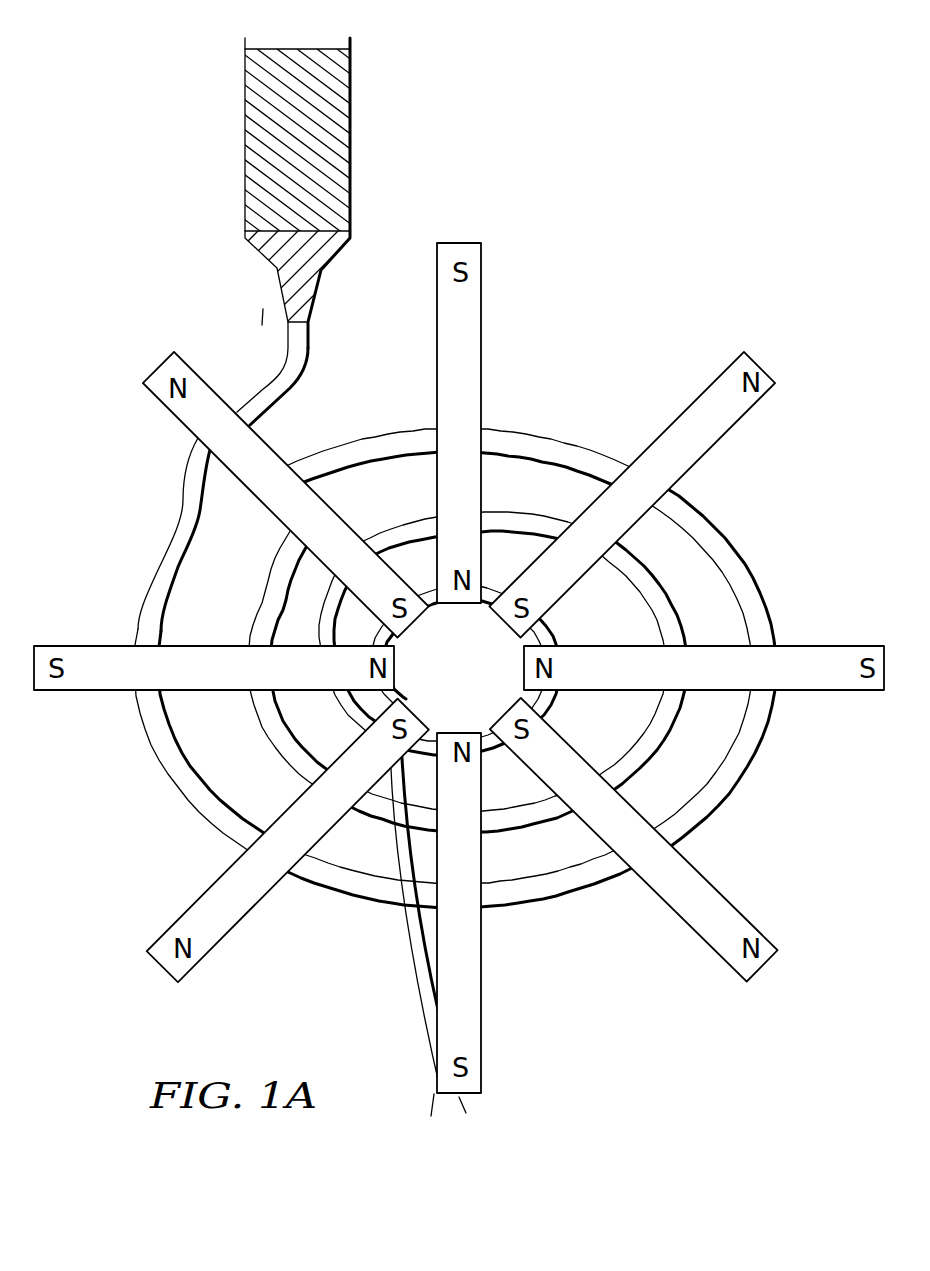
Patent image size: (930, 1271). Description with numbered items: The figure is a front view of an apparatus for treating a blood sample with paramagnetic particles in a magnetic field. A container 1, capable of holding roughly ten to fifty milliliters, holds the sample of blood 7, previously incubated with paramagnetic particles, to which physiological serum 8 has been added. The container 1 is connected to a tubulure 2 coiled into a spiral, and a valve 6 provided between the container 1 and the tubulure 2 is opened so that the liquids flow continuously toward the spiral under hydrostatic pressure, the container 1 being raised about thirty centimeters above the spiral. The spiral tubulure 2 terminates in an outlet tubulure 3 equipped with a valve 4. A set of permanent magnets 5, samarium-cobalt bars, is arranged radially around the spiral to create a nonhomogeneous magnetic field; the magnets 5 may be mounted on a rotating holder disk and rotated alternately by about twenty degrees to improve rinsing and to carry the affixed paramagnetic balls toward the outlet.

The container 1 is at (245, 122).
The tubulure 2 is at (178, 540).
The outlet tubulure 3 is at (425, 1014).
The valve 4 is at (435, 1105).
The permanent magnets 5 is at (481, 333).
The valve 6 is at (288, 320).
The sample of blood 7 is at (307, 297).
The physiological serum 8 is at (338, 150).